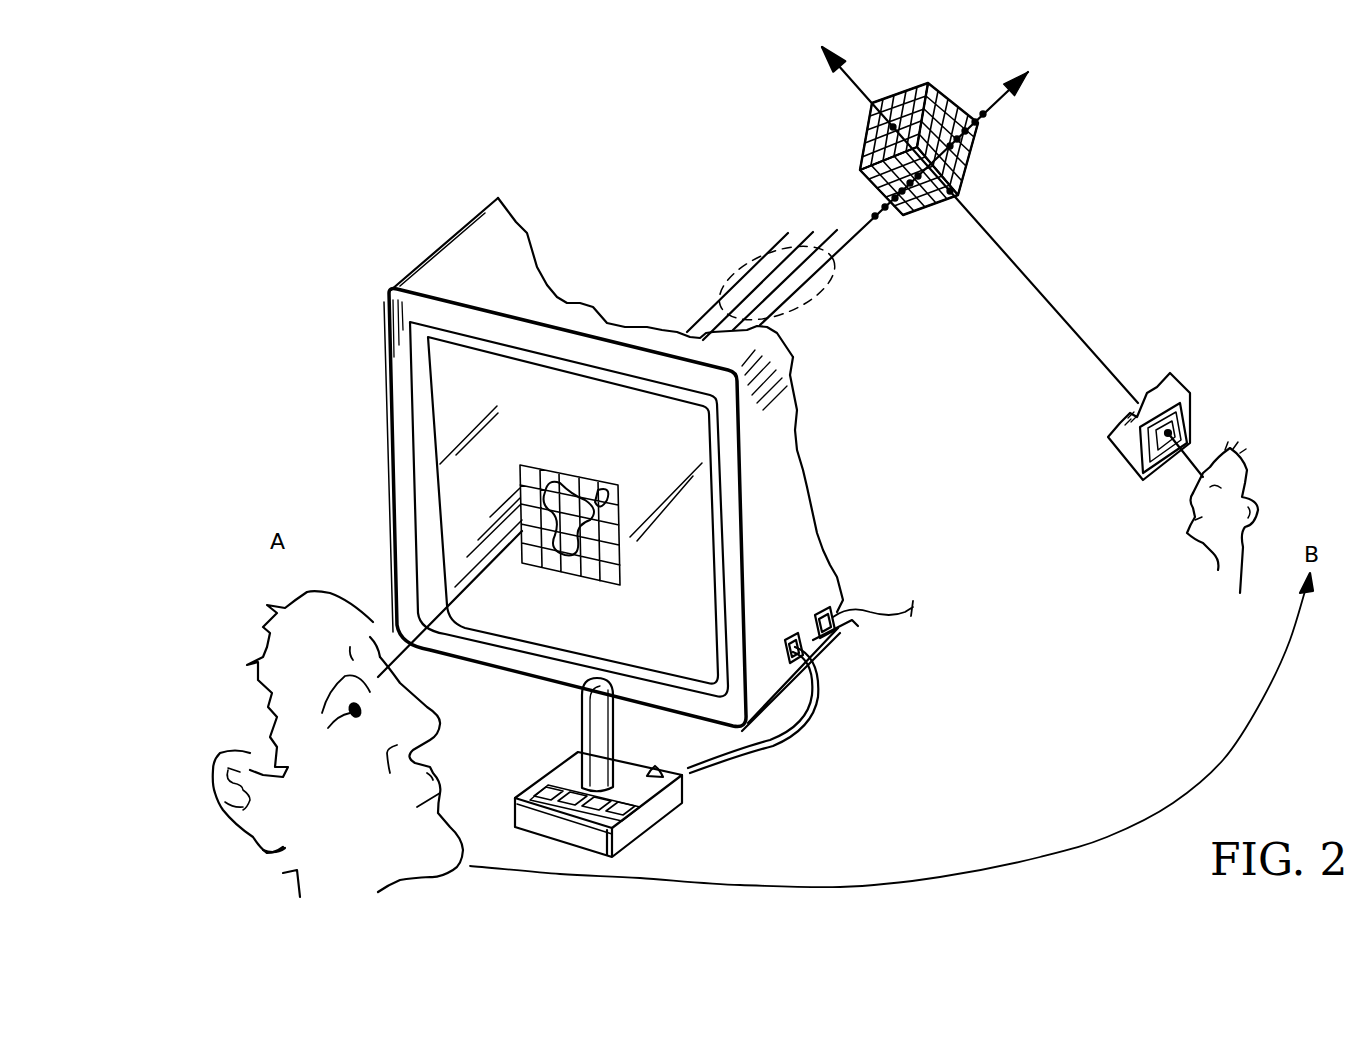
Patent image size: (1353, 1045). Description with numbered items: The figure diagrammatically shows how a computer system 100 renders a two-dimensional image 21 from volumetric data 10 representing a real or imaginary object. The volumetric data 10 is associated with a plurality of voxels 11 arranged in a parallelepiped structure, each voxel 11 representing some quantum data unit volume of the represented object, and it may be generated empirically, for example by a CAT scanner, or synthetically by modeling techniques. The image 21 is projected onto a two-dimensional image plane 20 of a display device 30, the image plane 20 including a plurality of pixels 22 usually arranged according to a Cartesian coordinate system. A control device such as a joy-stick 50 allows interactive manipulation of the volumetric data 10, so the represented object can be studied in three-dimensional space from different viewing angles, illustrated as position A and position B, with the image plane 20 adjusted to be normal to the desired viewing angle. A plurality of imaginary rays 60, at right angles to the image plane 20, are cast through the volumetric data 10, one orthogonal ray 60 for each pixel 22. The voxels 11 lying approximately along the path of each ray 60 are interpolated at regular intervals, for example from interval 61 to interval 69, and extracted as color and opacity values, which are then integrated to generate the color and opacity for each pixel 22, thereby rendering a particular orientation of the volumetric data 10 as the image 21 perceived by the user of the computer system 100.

The volumetric data 10 is at (1000, 155).
The voxel 11 is at (923, 85).
The image plane 20 is at (622, 558).
The image 21 is at (606, 495).
The pixel 22 is at (565, 480).
The display device 30 is at (823, 543).
The joy-stick 50 is at (657, 823).
The imaginary ray 60 is at (767, 247).
The interval 61 is at (873, 210).
The interval 69 is at (993, 102).
The computer system 100 is at (512, 733).